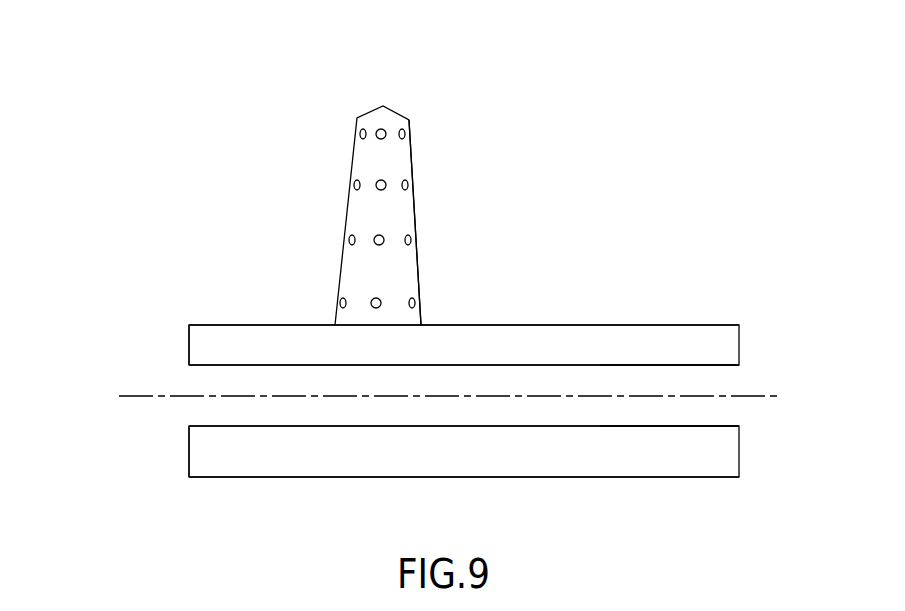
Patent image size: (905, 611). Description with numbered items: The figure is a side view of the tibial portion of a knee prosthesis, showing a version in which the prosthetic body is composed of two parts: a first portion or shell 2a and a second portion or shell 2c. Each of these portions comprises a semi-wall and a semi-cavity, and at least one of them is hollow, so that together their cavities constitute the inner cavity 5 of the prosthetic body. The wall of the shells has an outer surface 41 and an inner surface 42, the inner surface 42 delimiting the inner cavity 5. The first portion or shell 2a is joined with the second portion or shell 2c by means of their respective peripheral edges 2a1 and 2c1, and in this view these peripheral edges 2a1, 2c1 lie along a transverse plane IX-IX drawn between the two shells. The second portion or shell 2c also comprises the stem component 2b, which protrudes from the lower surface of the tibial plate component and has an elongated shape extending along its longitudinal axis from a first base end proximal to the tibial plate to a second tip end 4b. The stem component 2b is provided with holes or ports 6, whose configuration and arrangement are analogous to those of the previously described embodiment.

The second tip end 4b is at (402, 104).
The stem component 2b is at (418, 202).
The holes or ports 6 is at (349, 181).
The second portion or shell 2c is at (730, 344).
The peripheral edge 2c1 is at (205, 364).
The first portion or shell 2a is at (725, 446).
The peripheral edge 2a1 is at (206, 426).
The outer surface 41 is at (625, 338).
The inner surface 42 is at (540, 370).
The inner cavity 5 is at (708, 420).
The transverse plane IX is at (132, 393).